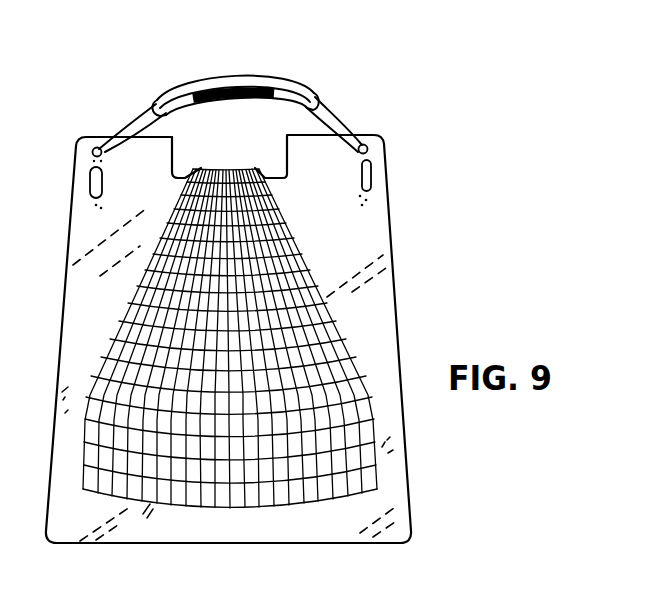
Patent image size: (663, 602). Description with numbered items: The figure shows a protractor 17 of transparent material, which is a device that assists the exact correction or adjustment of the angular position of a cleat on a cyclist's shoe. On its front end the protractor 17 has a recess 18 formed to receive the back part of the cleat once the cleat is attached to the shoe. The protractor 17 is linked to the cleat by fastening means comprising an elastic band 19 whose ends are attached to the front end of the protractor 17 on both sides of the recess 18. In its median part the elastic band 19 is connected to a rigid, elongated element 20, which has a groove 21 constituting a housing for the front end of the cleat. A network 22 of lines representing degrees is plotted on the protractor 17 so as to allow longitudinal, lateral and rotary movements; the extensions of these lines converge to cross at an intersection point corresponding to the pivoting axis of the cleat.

The protractor 17 is at (351, 229).
The recess 18 is at (182, 159).
The elastic band 19 is at (336, 109).
The rigid, elongated element 20 is at (297, 77).
The groove 21 is at (213, 84).
The network of lines 22 is at (363, 350).